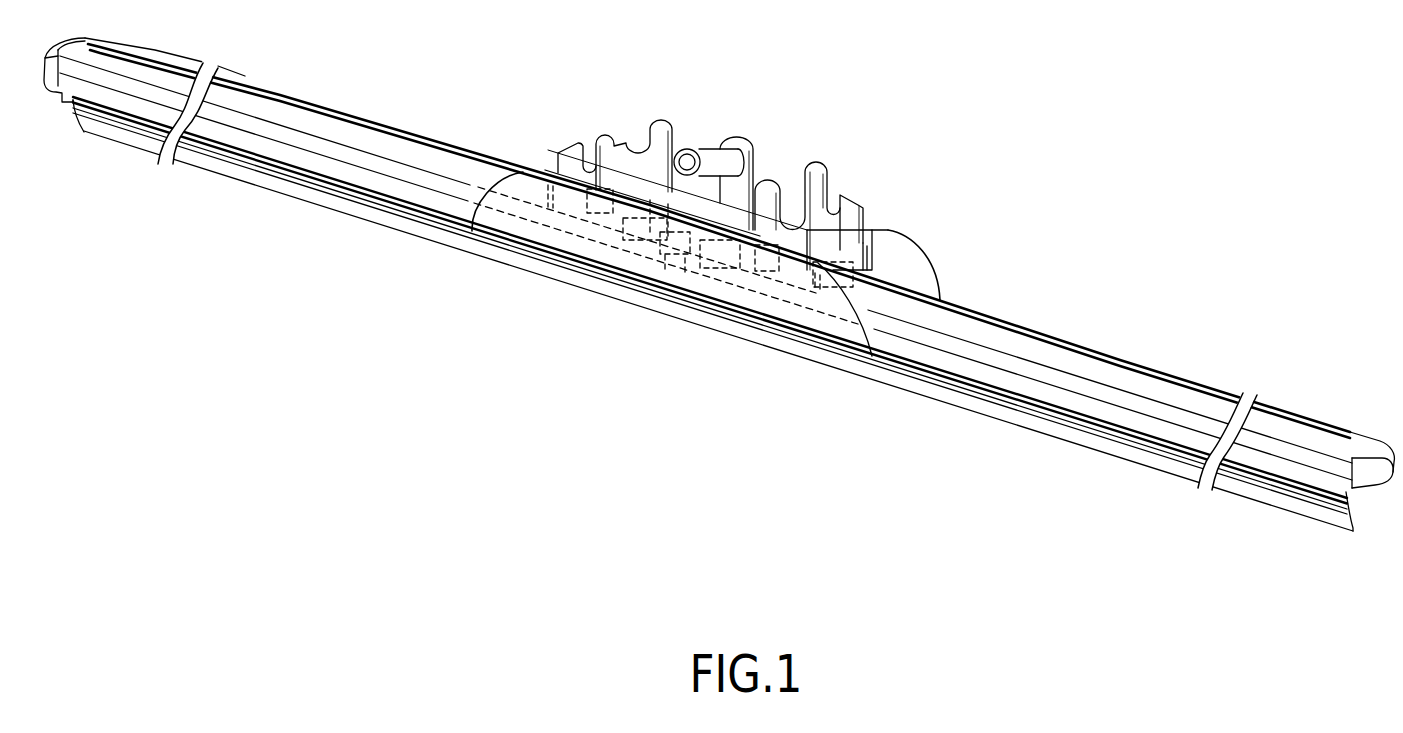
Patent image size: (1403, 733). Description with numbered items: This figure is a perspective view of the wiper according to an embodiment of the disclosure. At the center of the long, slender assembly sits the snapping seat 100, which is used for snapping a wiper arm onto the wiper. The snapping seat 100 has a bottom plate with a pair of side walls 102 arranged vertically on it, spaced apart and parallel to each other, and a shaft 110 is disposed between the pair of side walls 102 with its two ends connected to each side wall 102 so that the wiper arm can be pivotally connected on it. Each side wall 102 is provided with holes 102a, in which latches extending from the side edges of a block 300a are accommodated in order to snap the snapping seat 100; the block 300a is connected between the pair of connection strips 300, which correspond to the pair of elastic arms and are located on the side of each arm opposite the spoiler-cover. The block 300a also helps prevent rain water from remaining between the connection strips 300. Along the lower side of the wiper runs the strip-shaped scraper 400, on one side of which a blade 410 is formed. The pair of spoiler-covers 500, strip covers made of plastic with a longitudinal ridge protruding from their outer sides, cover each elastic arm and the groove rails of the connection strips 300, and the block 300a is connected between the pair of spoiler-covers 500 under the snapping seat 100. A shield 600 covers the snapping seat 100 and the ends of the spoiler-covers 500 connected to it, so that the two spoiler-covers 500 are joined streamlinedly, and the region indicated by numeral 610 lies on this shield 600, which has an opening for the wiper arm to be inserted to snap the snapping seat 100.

The snapping seat 100 is at (728, 163).
The side wall 102 is at (603, 148).
The hole 102a is at (624, 248).
The shaft 110 is at (710, 163).
The connection strip 300 is at (558, 236).
The block 300a is at (684, 264).
The scraper 400 is at (1131, 464).
The blade 410 is at (1245, 484).
The spoiler-cover 500 is at (378, 117).
The shield 600 is at (931, 268).
The cover opening 610 is at (842, 236).